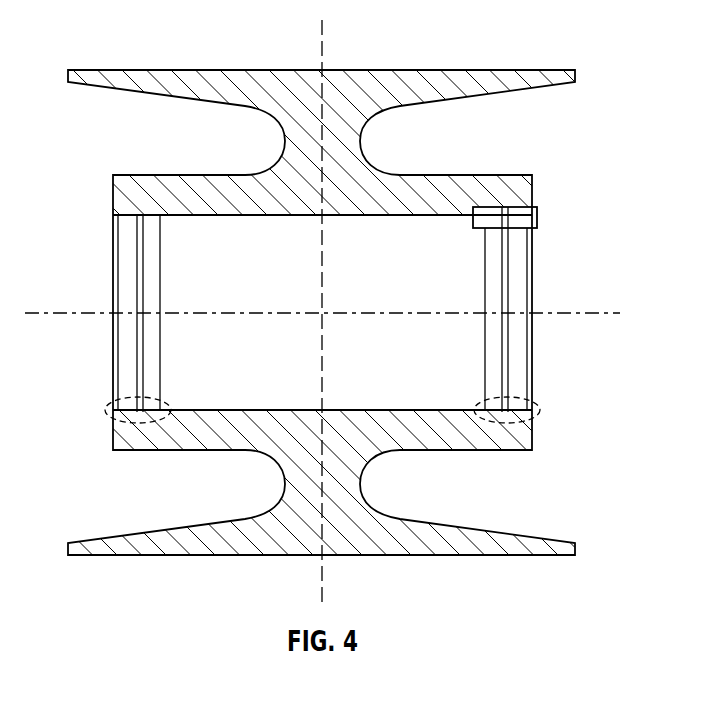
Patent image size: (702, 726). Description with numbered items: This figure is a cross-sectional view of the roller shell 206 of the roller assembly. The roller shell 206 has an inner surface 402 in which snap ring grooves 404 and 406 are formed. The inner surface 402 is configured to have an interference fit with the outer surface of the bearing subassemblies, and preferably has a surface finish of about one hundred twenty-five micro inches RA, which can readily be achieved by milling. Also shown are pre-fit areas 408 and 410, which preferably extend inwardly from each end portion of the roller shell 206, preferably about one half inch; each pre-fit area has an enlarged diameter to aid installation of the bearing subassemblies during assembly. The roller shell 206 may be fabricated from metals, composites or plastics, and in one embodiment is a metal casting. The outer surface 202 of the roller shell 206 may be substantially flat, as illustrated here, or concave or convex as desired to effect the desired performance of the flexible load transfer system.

The outer surface 202 is at (138, 70).
The roller shell 206 is at (437, 87).
The inner surface 402 is at (412, 210).
The snap ring groove 404 is at (140, 287).
The snap ring groove 406 is at (506, 287).
The pre-fit area 408 is at (114, 407).
The pre-fit area 410 is at (532, 410).